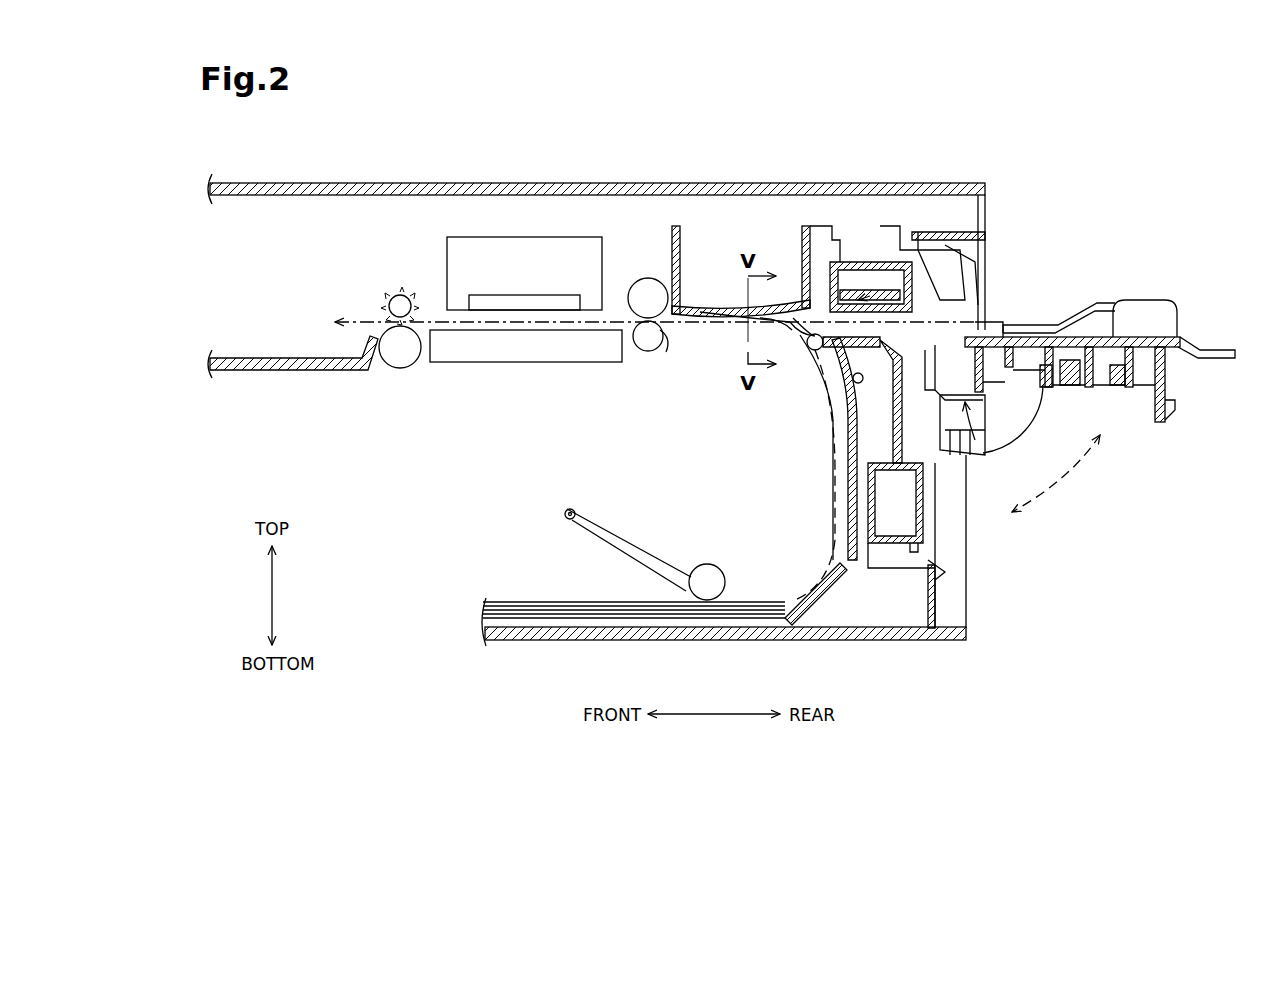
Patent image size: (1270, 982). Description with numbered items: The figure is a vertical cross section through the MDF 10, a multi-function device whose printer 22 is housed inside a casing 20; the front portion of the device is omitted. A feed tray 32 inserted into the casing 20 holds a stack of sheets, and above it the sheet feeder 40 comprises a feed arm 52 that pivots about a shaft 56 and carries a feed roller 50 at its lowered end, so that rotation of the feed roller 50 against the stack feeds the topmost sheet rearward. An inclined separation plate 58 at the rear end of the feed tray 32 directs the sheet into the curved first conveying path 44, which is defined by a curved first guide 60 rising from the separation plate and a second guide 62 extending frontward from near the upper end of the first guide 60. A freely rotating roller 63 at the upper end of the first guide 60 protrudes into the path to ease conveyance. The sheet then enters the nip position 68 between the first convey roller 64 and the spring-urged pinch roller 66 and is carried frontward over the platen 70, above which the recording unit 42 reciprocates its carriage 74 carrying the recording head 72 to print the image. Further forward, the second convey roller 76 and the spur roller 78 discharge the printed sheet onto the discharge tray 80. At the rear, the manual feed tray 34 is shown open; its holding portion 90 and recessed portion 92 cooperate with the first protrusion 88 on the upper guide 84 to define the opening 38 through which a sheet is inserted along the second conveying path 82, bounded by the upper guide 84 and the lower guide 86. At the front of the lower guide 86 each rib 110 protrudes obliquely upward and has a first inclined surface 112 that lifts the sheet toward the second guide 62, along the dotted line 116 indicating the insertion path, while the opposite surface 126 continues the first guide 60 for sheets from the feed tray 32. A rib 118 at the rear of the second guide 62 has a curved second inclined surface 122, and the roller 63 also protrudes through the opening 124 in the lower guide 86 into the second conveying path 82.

The MDF 10 is at (1010, 140).
The casing 20 is at (312, 170).
The printer 22 is at (642, 222).
The feed tray 32 is at (508, 588).
The manual feed tray 34 is at (1112, 278).
The opening 38 is at (1005, 325).
The sheet feeder 40 is at (605, 518).
The recording unit 42 is at (466, 218).
The first conveying path 44 is at (833, 508).
The feed roller 50 is at (710, 574).
The feed arm 52 is at (647, 550).
The shaft 56 is at (566, 511).
The inclined separation plate 58 is at (825, 595).
The first guide 60 is at (845, 533).
The second guide 62 is at (702, 300).
The roller 63 is at (815, 355).
The first convey roller 64 is at (643, 292).
The pinch roller 66 is at (645, 352).
The nip position 68 is at (660, 350).
The platen 70 is at (530, 363).
The recording head 72 is at (523, 298).
The carriage 74 is at (565, 248).
The second convey roller 76 is at (398, 362).
The spur roller 78 is at (400, 295).
The discharge tray 80 is at (318, 371).
The second conveying path 82 is at (925, 292).
The upper guide 84 is at (862, 262).
The lower guide 86 is at (825, 400).
The first protrusion 88 is at (985, 327).
The holding portion 90 is at (1118, 330).
The recessed portion 92 is at (990, 456).
The rib 110 is at (800, 340).
The first inclined surface 112 is at (770, 322).
The dotted line 116 is at (730, 302).
The rib 118 is at (797, 303).
The second inclined surface 122 is at (818, 300).
The opening 124 is at (845, 288).
The surface 126 is at (755, 328).